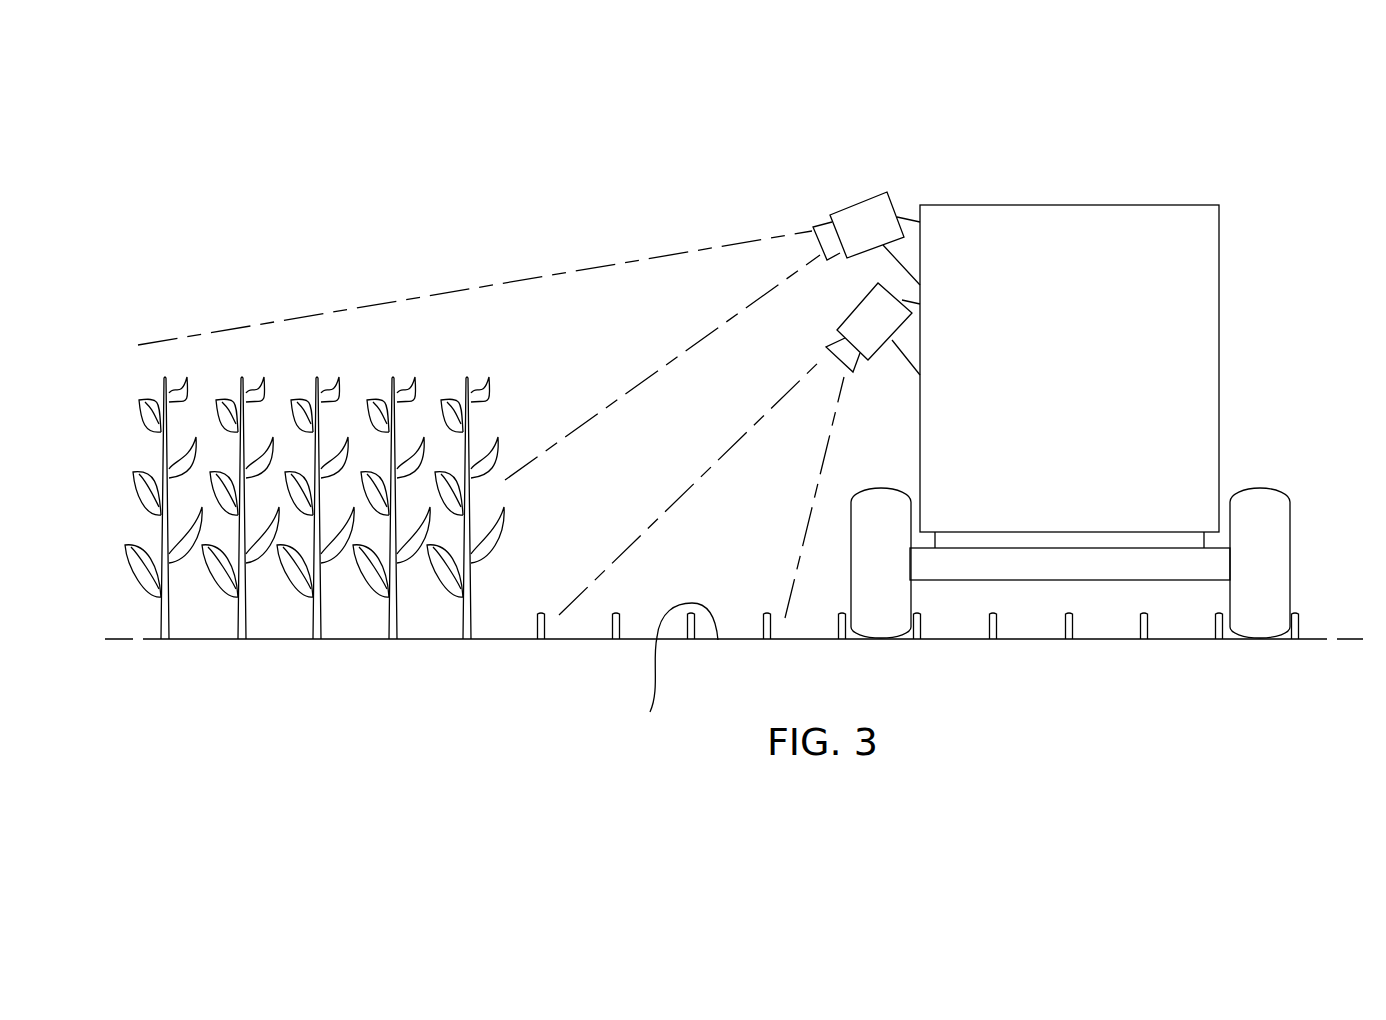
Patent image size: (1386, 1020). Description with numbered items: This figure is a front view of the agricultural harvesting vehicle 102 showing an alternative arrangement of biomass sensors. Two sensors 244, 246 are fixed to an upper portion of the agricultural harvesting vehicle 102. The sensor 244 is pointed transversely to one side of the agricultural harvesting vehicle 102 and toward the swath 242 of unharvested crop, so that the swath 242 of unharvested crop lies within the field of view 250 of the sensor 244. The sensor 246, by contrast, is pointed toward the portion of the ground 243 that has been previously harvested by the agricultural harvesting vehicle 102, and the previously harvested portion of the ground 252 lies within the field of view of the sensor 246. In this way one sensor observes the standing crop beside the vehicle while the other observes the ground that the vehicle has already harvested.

The agricultural harvesting vehicle 102 is at (1095, 205).
The swath of unharvested crop 242 is at (475, 245).
The portion of the ground previously harvested 243 is at (635, 373).
The sensor 244 is at (868, 228).
The sensor 246 is at (872, 318).
The field of view 250 is at (470, 287).
The portion of the ground previously harvested 252 is at (650, 525).